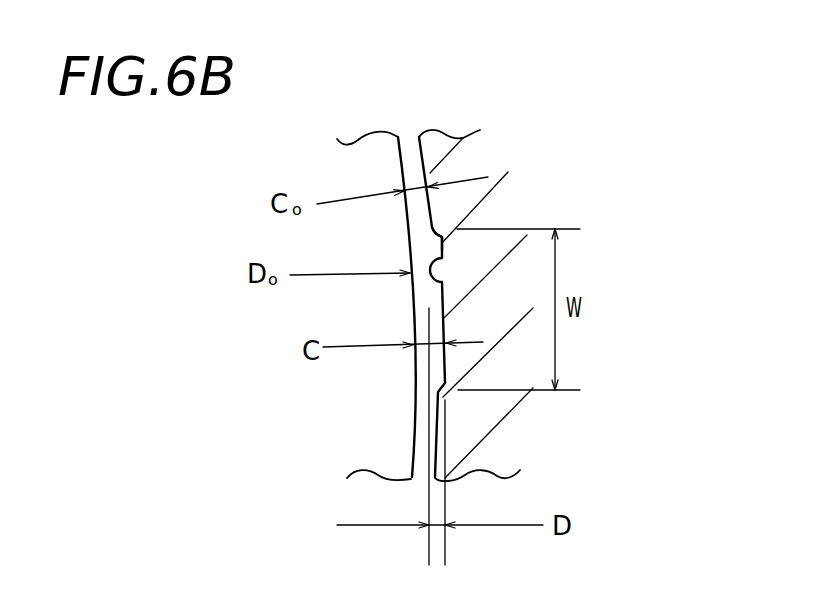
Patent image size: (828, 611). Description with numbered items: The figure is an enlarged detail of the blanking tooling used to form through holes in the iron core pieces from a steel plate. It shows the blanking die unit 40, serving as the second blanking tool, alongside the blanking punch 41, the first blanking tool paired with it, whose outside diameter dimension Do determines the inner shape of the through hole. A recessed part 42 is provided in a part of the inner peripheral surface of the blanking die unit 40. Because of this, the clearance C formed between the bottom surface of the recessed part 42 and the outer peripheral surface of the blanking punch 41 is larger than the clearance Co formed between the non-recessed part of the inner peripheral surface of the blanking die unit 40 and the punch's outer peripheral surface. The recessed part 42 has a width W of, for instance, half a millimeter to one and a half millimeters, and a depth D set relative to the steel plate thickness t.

The blanking die unit 40 is at (485, 153).
The blanking punch 41 is at (363, 160).
The recessed part 42 is at (443, 243).